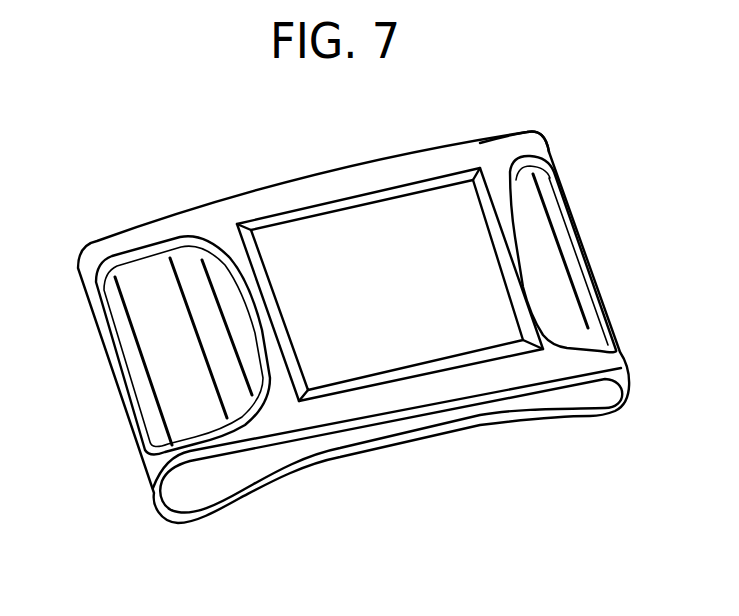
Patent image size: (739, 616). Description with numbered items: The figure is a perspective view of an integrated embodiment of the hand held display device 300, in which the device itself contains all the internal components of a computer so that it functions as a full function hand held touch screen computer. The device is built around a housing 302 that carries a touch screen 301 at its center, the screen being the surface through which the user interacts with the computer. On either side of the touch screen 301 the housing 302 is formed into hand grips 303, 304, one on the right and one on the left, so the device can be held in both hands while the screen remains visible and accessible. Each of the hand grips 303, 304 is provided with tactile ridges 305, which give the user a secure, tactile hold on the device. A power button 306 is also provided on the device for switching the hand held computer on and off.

The display device 300 is at (348, 146).
The touch screen 301 is at (317, 243).
The housing 302 is at (505, 153).
The hand grip 303 is at (596, 281).
The hand grip 304 is at (140, 298).
The tactile ridges 305 is at (147, 373).
The power button 306 is at (192, 499).